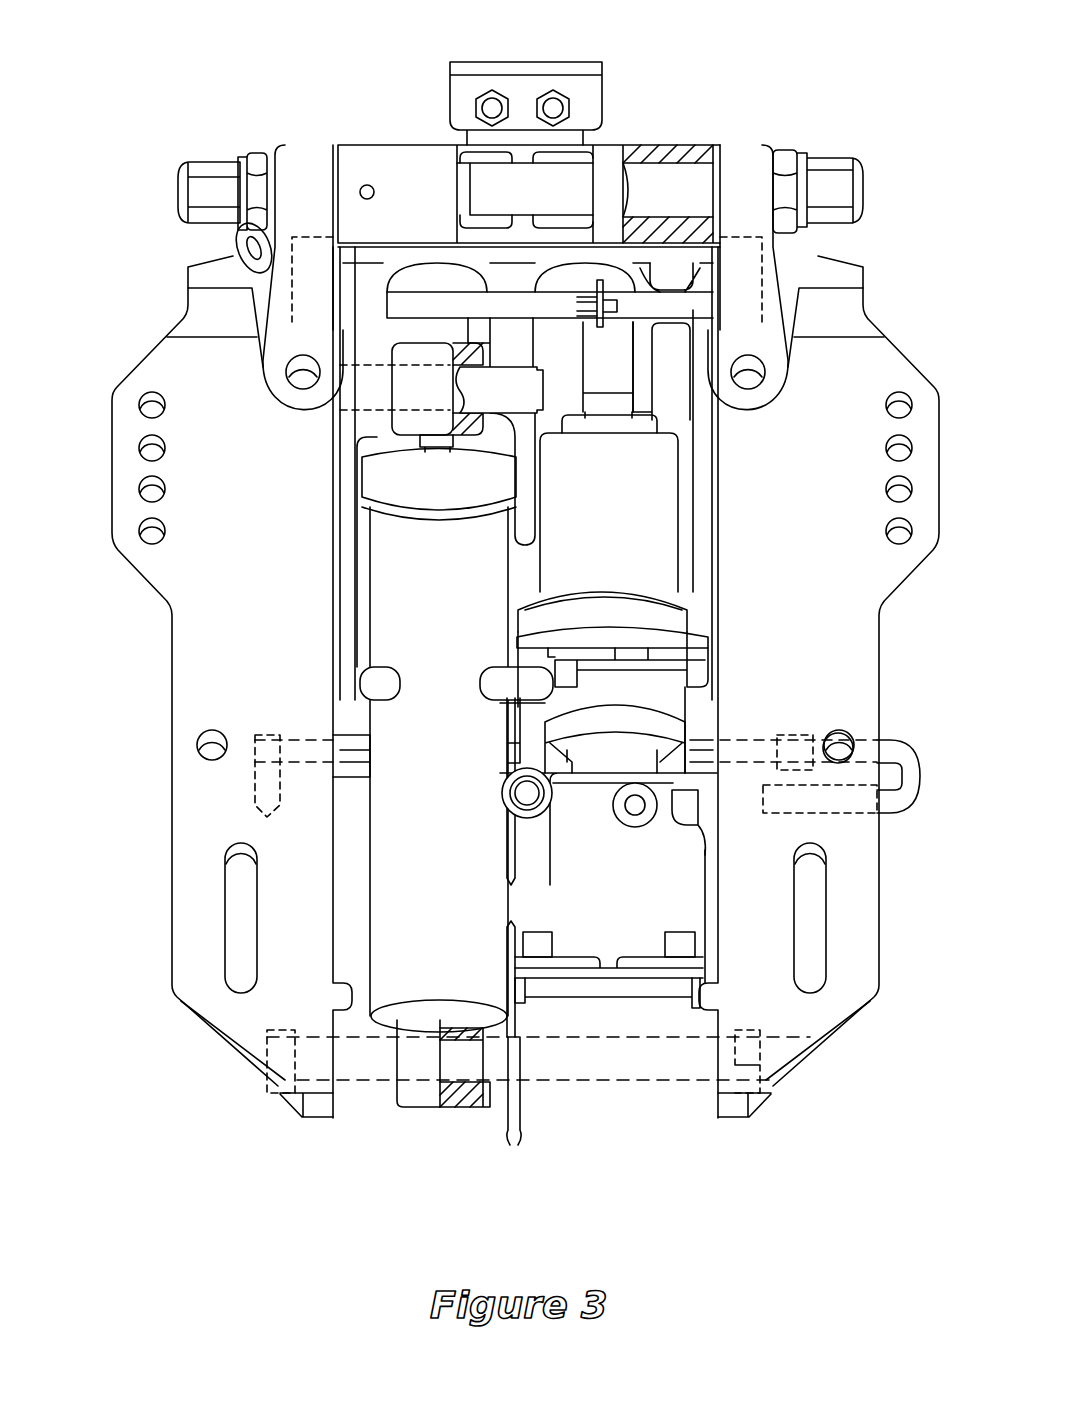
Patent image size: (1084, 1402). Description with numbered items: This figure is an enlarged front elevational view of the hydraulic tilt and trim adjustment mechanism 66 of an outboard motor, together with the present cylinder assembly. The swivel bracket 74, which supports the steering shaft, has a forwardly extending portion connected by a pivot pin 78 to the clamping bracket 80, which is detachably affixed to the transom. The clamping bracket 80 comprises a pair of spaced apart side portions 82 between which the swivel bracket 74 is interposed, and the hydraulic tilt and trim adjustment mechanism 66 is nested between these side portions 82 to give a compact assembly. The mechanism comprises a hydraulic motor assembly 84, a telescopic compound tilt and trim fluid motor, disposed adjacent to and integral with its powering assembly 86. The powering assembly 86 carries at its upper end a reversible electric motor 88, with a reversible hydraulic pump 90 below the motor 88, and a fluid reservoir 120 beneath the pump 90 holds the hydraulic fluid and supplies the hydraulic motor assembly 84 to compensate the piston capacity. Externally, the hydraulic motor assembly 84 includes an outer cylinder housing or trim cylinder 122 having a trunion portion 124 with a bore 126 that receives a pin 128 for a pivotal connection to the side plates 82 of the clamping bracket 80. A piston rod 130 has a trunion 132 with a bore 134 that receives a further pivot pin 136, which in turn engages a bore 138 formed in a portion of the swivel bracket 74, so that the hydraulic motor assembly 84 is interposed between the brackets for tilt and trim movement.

The hydraulic tilt and trim adjustment mechanism 66 is at (730, 92).
The swivel bracket 74 is at (407, 141).
The pivot pin 78 is at (213, 158).
The clamping bracket 80 is at (152, 336).
The side portions 82 is at (190, 691).
The hydraulic motor assembly 84 is at (347, 636).
The powering assembly 86 is at (694, 490).
The reversible electric motor 88 is at (657, 562).
The reversible hydraulic pump 90 is at (695, 692).
The fluid reservoir 120 is at (690, 898).
The trim cylinder 122 is at (398, 845).
The trunion portion 124 is at (422, 1062).
The bore 126 is at (458, 1033).
The pin 128 is at (502, 1068).
The piston rod 130 is at (407, 447).
The trunion 132 is at (380, 420).
The bore 134 is at (410, 368).
The pivot pin 136 is at (503, 398).
The bore 138 is at (513, 374).